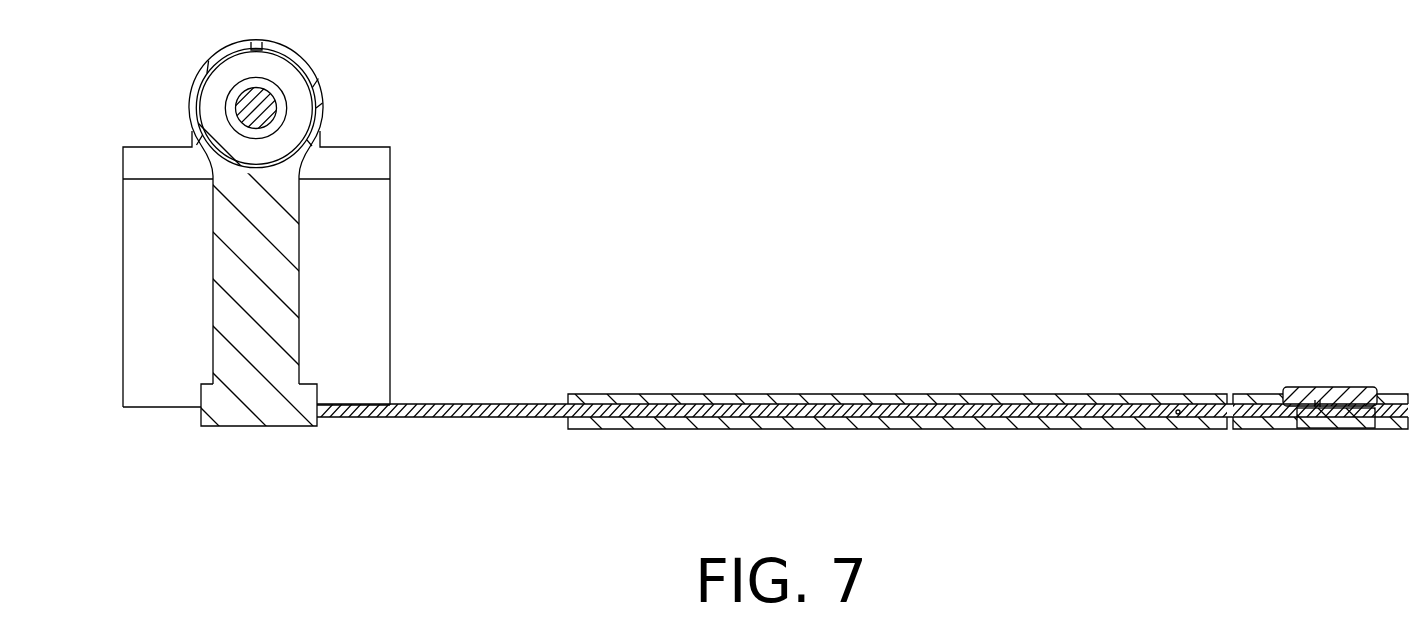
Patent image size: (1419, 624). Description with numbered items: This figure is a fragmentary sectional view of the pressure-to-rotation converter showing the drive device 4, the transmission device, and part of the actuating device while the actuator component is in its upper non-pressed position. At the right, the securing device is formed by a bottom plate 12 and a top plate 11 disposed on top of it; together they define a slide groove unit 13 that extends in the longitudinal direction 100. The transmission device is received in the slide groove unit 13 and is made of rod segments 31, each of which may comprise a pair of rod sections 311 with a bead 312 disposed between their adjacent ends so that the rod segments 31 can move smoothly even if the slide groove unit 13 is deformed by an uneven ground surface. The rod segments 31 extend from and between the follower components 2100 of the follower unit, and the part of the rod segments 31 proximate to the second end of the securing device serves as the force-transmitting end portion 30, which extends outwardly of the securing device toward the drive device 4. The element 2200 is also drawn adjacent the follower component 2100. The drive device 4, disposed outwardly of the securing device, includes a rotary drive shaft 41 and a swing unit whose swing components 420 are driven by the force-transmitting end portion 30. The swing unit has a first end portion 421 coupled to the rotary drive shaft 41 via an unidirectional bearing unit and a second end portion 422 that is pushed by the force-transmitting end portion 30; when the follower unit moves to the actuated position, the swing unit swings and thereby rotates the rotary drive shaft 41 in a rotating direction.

The drive device 4 is at (270, 287).
The rotary drive shaft 41 is at (257, 103).
The swing component 420 is at (230, 178).
The first end portion 421 is at (318, 92).
The second end portion 422 is at (255, 398).
The force-transmitting end portion 30 is at (472, 418).
The longitudinal direction 100 is at (635, 343).
The top plate 11 is at (979, 397).
The bottom plate 12 is at (1043, 424).
The slide groove unit 13 is at (973, 418).
The rod segment 31 is at (992, 397).
The rod section 311 is at (1077, 410).
The bead 312 is at (1179, 369).
The upper clamp 2200 is at (1333, 395).
The follower component 2100 is at (1315, 417).